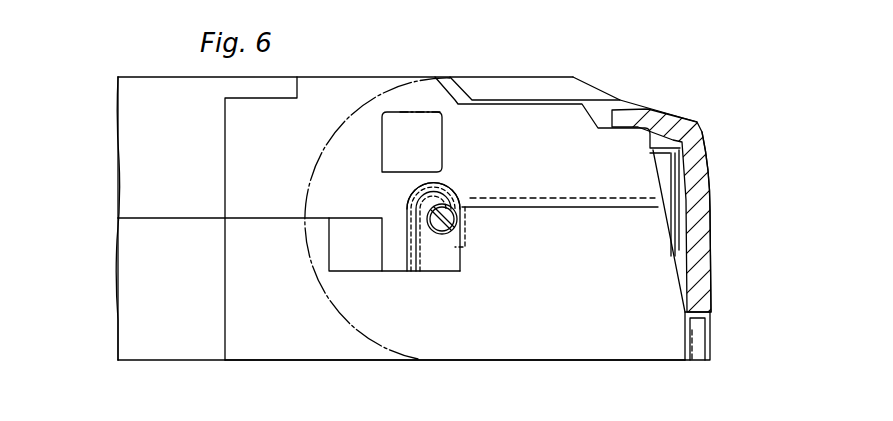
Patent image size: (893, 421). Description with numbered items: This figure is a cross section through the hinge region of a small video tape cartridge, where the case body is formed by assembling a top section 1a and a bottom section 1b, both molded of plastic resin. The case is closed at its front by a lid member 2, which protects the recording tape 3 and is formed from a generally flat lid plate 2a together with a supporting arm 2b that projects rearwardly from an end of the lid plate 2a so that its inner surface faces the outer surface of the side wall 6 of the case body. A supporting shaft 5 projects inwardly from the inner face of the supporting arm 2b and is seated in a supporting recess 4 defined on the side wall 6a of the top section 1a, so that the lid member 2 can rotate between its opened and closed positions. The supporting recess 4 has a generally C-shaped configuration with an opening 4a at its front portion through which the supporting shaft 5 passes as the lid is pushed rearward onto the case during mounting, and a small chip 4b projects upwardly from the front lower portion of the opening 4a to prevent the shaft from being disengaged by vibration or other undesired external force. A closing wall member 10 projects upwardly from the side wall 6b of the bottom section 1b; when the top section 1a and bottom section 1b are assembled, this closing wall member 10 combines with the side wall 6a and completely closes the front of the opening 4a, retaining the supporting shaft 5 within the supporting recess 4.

The top section 1a is at (119, 146).
The bottom section 1b is at (116, 282).
The lid member 2 is at (675, 110).
The lid plate 2a is at (712, 260).
The supporting arm 2b is at (373, 96).
The recording tape 3 is at (670, 210).
The supporting recess 4 is at (412, 215).
The opening 4a is at (459, 193).
The small chip 4b is at (466, 232).
The supporting shaft 5 is at (444, 206).
The side wall 6 is at (148, 84).
The side wall of top section 6a is at (565, 114).
The side wall of bottom section 6b is at (586, 346).
The closing wall member 10 is at (477, 216).